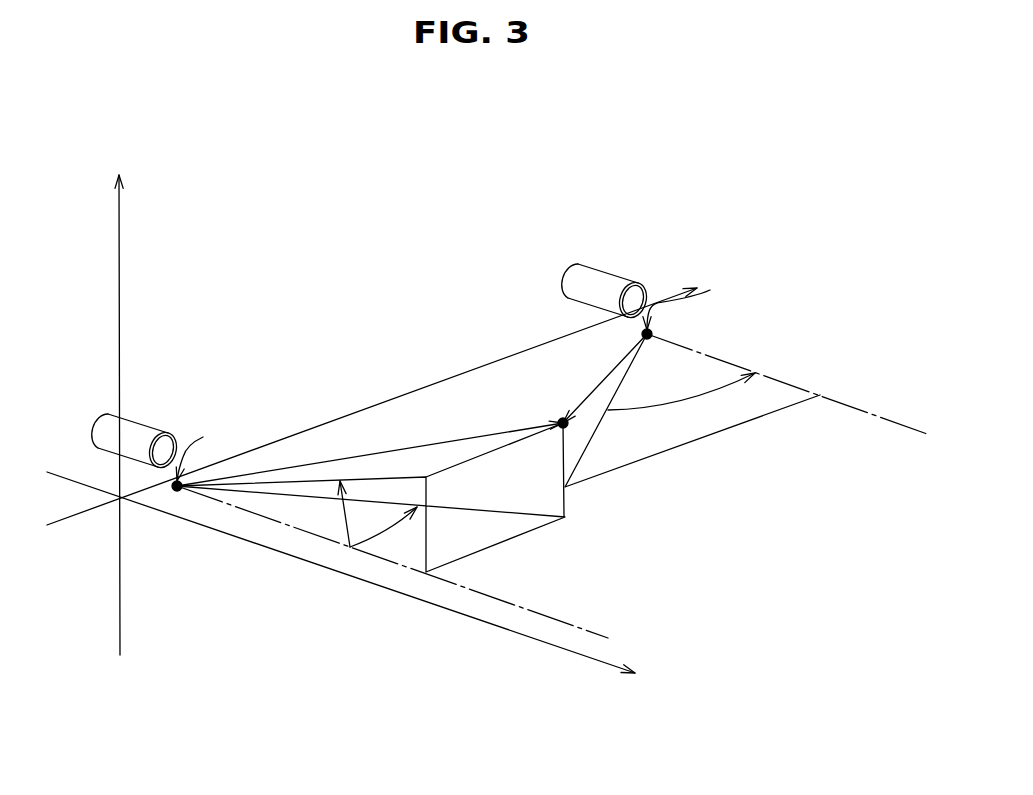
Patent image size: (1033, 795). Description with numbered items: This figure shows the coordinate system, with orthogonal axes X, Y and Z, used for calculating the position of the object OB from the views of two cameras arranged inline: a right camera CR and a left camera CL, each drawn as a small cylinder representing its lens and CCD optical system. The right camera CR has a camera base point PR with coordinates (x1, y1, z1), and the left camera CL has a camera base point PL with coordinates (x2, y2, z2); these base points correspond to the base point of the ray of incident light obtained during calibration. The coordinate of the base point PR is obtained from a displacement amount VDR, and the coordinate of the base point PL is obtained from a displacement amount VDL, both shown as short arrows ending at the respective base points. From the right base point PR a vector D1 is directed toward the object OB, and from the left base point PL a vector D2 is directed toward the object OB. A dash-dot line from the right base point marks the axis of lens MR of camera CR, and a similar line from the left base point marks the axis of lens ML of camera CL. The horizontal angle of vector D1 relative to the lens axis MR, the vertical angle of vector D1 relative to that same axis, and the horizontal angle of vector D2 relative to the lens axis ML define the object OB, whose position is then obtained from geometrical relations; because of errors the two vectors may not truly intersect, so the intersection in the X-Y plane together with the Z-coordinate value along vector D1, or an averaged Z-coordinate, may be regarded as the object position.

The right camera CR is at (137, 428).
The left camera CL is at (589, 283).
The camera base point of the right camera PR is at (176, 491).
The camera base point of the left camera PL is at (652, 335).
The displacement amount for the right camera VDR is at (207, 454).
The displacement amount for the left camera VDL is at (694, 303).
The vector from right camera base point to object D1 is at (379, 455).
The vector from left camera base point to object D2 is at (607, 375).
The axis of lens of the right camera MR is at (572, 627).
The axis of lens of the left camera ML is at (880, 417).
The object OB is at (569, 425).
The X axis X is at (341, 584).
The Y axis Y is at (372, 393).
The Z axis Z is at (107, 415).